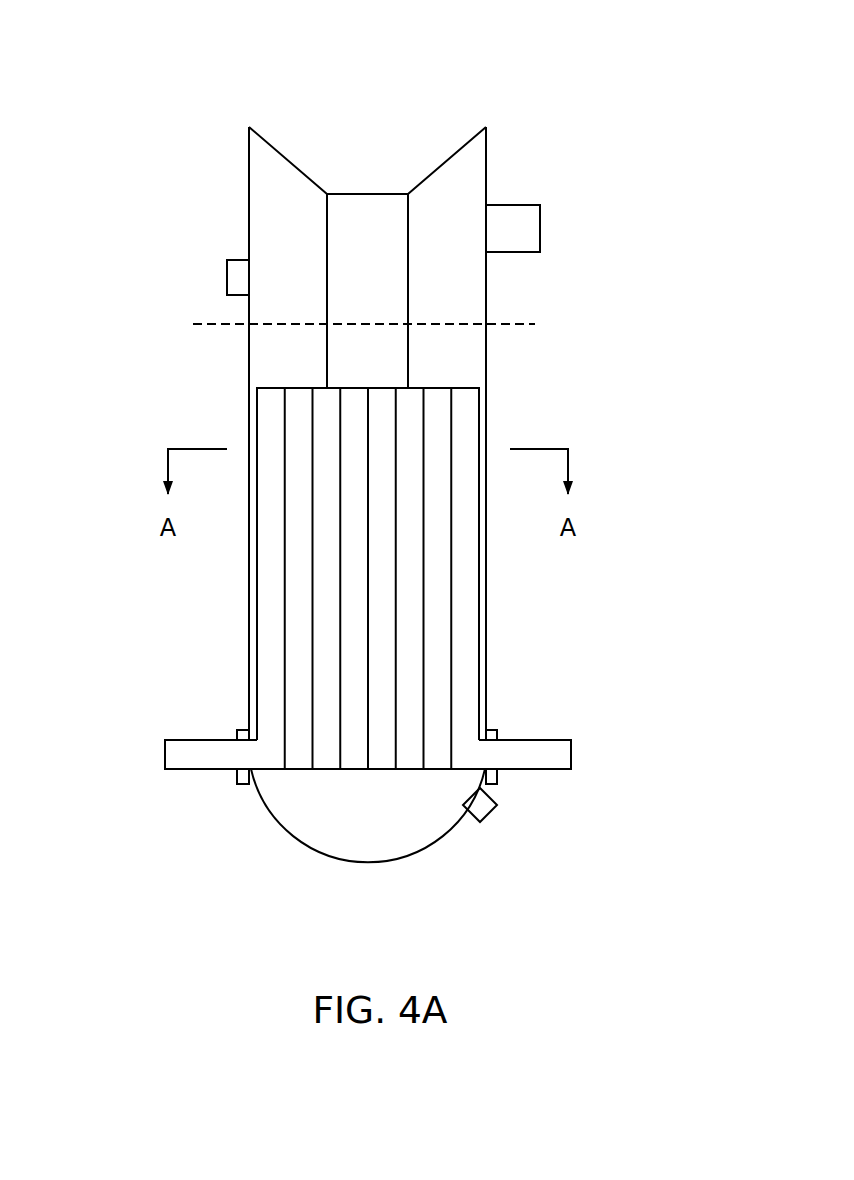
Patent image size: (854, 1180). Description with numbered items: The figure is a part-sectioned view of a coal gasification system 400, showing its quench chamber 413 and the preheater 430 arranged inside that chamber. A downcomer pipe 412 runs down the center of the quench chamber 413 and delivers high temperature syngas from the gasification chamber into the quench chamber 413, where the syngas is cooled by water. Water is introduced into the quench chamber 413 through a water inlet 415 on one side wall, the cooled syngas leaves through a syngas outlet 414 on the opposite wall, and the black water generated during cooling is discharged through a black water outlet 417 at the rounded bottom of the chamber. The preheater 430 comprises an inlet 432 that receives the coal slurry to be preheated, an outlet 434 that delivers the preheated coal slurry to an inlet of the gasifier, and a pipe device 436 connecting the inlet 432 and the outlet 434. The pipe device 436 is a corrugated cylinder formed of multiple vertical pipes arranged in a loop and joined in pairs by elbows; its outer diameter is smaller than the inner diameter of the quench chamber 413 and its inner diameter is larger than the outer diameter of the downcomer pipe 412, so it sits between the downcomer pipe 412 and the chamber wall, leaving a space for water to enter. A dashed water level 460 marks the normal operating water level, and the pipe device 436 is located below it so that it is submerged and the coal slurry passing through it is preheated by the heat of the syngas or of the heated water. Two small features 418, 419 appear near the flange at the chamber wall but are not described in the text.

The coal gasification system 400 is at (219, 77).
The downcomer pipe 412 is at (351, 360).
The quench chamber 413 is at (267, 173).
The syngas outlet 414 is at (525, 194).
The water inlet 415 is at (204, 280).
The black water outlet 417 is at (497, 837).
The left mounting clip 418 is at (232, 724).
The right mounting clip 419 is at (500, 714).
The preheater 430 is at (257, 411).
The inlet 432 is at (153, 757).
The outlet 434 is at (590, 753).
The pipe device 436 is at (265, 610).
The water level 460 is at (520, 323).